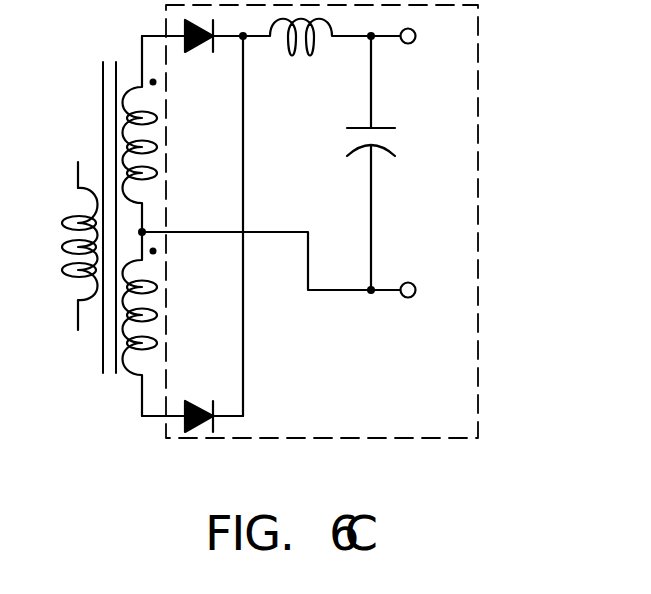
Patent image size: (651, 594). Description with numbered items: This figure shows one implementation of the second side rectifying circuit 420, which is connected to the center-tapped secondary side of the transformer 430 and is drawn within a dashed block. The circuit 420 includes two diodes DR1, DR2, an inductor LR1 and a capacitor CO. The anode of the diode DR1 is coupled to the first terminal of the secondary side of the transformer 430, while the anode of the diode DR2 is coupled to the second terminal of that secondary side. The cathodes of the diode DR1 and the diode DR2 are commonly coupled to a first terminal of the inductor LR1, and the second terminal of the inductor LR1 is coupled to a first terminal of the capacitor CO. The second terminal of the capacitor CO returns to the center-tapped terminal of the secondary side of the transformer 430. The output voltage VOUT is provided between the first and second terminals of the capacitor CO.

The second side rectifying circuit 420 is at (480, 58).
The transformer 430 is at (110, 387).
The diode DR1 is at (201, 60).
The diode DR2 is at (201, 396).
The inductor LR1 is at (301, 59).
The capacitor CO is at (379, 163).
The output voltage VOUT is at (435, 163).